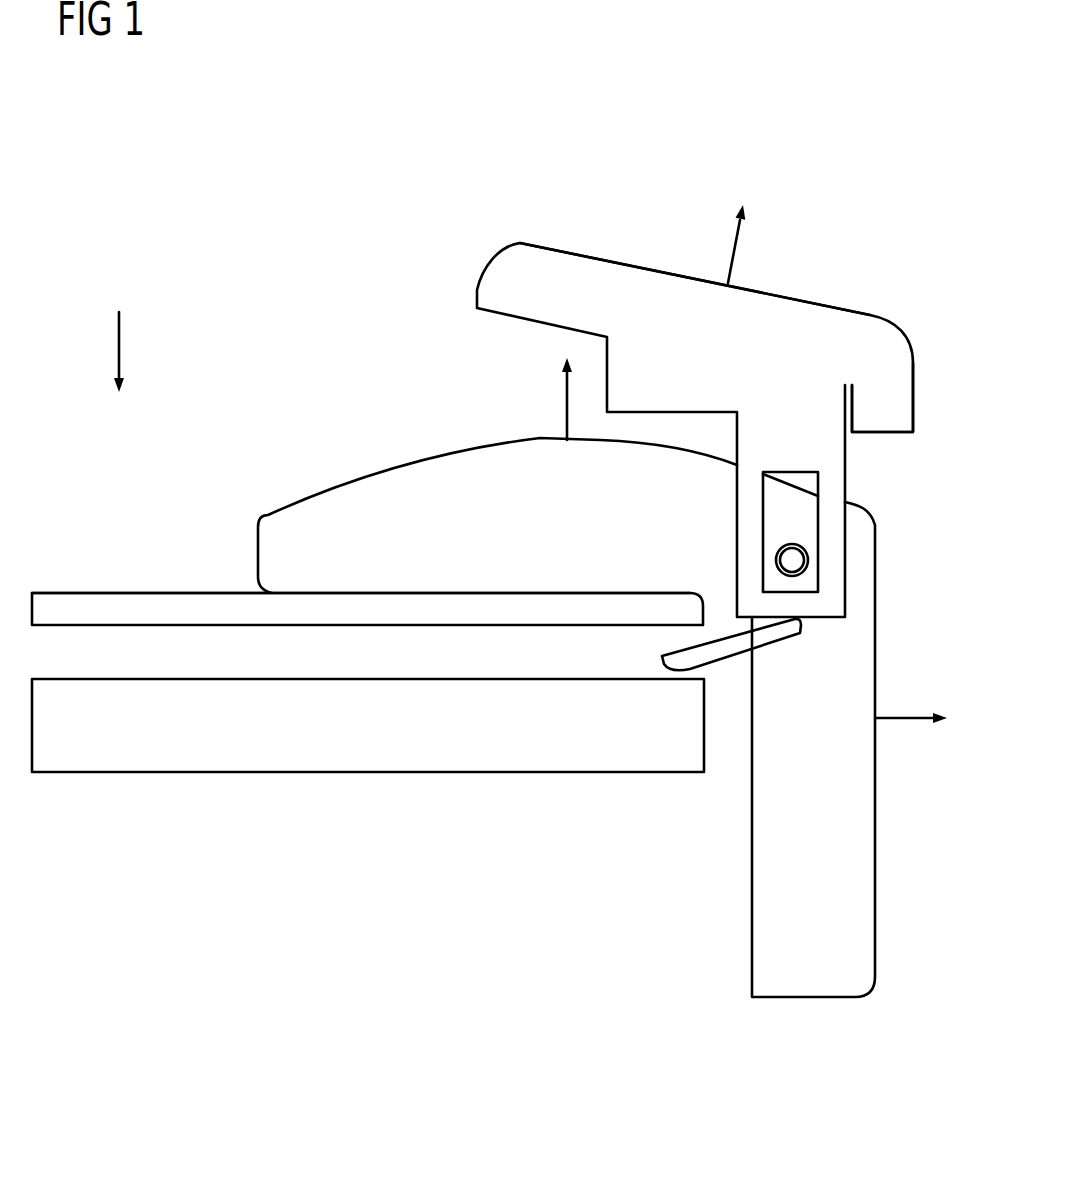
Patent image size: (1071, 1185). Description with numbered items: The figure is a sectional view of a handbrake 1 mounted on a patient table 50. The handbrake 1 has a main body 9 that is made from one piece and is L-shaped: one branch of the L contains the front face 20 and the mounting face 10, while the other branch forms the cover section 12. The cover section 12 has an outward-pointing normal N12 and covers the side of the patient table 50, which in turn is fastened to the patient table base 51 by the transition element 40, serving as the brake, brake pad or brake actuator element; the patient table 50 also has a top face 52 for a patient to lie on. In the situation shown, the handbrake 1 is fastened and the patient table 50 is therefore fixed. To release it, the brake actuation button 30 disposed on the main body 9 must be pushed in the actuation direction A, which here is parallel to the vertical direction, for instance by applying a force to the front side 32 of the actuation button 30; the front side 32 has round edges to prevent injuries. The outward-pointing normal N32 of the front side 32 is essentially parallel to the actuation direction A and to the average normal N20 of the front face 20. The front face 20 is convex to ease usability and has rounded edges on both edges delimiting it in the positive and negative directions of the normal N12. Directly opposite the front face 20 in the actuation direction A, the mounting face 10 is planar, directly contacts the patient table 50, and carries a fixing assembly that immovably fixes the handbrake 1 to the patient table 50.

The handbrake 1 is at (297, 247).
The main body 9 is at (438, 282).
The mounting face 10 is at (485, 570).
The cover section 12 is at (762, 878).
The front face 20 is at (428, 405).
The brake actuation button 30 is at (817, 377).
The front side 32 is at (690, 273).
The transition element 40 is at (676, 660).
The patient table 50 is at (200, 603).
The patient table base 51 is at (200, 762).
The top face 52 is at (90, 590).
The actuation direction A is at (119, 343).
The outward-pointing normal of the cover section N12 is at (912, 718).
The average normal of the front face N20 is at (567, 390).
The outward-pointing normal of the front side N32 is at (740, 240).